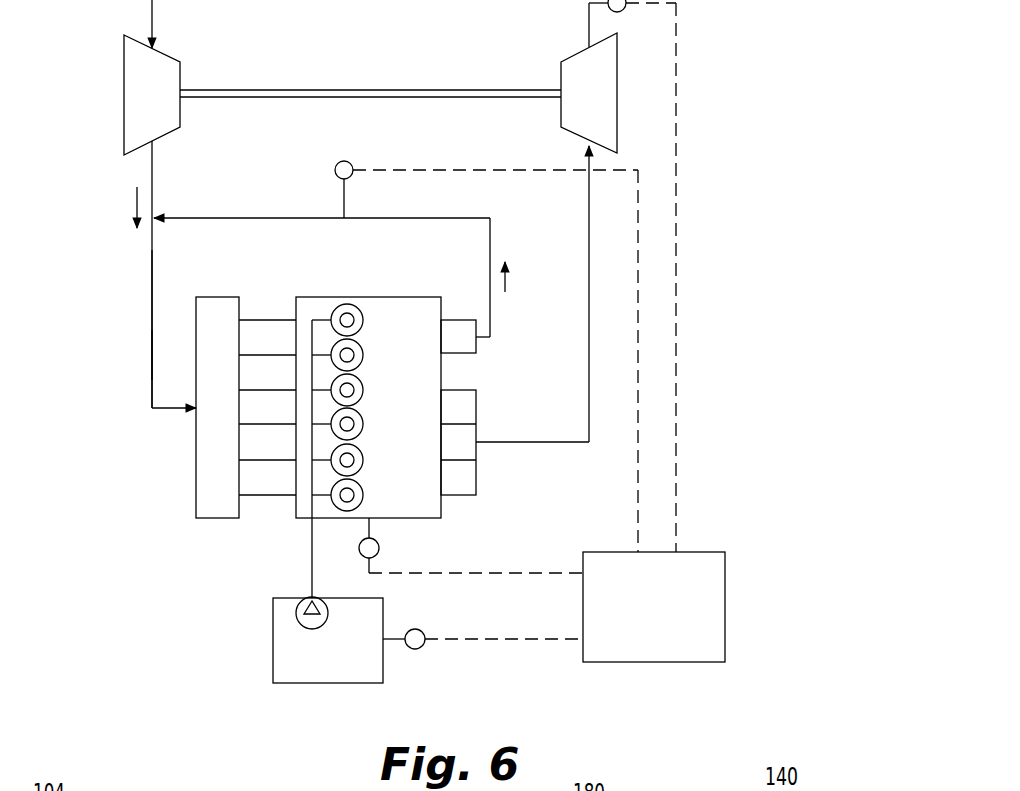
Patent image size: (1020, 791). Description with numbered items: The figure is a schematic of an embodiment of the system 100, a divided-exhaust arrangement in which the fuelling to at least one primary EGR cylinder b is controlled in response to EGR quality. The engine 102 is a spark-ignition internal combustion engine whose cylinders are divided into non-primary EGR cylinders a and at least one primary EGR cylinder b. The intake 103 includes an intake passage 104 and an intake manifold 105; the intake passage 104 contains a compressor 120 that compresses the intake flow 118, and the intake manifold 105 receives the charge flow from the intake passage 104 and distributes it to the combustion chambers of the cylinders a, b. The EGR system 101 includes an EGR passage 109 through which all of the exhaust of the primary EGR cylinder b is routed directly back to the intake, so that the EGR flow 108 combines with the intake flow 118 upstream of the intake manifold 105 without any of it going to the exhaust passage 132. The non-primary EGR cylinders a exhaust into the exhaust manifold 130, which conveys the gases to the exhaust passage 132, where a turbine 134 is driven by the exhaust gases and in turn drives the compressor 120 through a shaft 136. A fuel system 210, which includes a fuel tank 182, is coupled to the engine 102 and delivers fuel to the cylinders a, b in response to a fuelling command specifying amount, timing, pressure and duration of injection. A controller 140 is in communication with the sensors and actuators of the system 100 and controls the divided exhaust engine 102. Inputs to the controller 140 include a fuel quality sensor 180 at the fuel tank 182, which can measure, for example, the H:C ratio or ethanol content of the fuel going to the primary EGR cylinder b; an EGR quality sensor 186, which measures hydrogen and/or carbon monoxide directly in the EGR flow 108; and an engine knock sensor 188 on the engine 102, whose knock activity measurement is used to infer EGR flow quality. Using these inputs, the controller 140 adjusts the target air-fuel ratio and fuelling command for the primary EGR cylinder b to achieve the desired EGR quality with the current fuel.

The system 100 is at (745, 226).
The EGR system 101 is at (322, 425).
The engine 102 is at (300, 524).
The intake 103 is at (118, 341).
The intake passage 104 is at (150, 316).
The intake manifold 105 is at (196, 478).
The EGR flow 108 is at (514, 286).
The EGR passage 109 is at (282, 216).
The intake flow 118 is at (134, 202).
The compressor 120 is at (170, 108).
The exhaust manifold 130 is at (478, 472).
The exhaust passage 132 is at (589, 350).
The turbine 134 is at (606, 108).
The shaft 136 is at (262, 88).
The controller 140 is at (730, 606).
The fuel quality sensor 180 is at (418, 629).
The fuel tank 182 is at (294, 684).
The EGR quality sensor 186 is at (352, 165).
The engine knock sensor 188 is at (380, 547).
The fuel system 210 is at (364, 688).
The non-primary EGR cylinders a is at (363, 421).
The primary EGR cylinder b is at (363, 318).